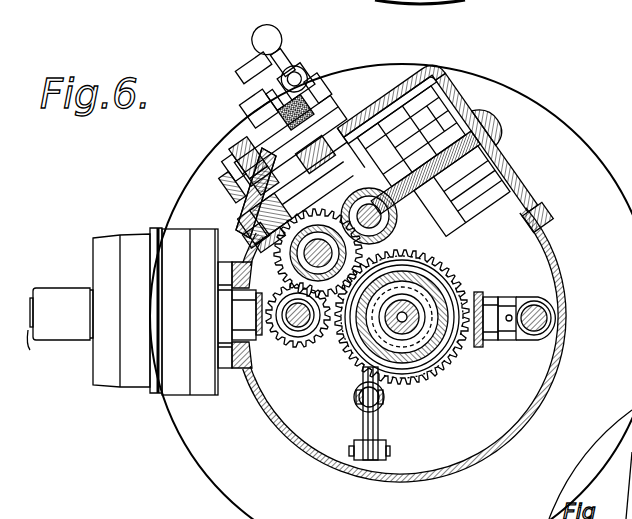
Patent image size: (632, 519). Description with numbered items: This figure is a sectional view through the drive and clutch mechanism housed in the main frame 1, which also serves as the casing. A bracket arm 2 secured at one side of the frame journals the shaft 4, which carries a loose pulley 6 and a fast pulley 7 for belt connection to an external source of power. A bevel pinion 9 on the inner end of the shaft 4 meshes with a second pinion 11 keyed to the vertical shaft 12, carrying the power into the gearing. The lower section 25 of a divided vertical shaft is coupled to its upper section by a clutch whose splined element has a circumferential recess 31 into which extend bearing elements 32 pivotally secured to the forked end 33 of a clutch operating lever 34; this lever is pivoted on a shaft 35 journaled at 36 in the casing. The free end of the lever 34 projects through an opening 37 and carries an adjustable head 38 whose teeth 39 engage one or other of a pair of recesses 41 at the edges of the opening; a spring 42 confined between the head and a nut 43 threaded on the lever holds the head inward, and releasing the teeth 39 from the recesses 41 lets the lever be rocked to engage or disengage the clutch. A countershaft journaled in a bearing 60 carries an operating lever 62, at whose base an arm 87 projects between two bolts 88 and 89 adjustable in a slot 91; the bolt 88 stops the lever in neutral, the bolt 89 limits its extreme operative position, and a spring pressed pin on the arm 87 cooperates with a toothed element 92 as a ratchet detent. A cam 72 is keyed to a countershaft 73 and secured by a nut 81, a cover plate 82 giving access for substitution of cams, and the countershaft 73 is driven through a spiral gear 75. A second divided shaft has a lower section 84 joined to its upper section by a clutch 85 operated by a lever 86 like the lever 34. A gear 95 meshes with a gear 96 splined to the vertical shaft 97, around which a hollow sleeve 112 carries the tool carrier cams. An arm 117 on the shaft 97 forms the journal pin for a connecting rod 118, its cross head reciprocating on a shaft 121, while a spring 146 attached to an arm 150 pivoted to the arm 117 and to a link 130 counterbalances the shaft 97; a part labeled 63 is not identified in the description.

The main frame 1 is at (449, 75).
The bracket arm 2 is at (62, 328).
The shaft 4 is at (31, 326).
The loose pulley 6 is at (120, 236).
The fast pulley 7 is at (180, 229).
The bevel pinion 9 is at (261, 341).
The second pinion 11 is at (302, 345).
The vertical shaft 12 is at (295, 328).
The lower section of shaft 25 is at (333, 258).
The circumferential recess 31 is at (328, 272).
The bearing elements 32 is at (399, 300).
The forked end 33 is at (258, 247).
The clutch operating lever 34 is at (234, 209).
The shaft 35 is at (266, 210).
The journal 36 is at (308, 178).
The opening 37 is at (278, 268).
The adjustable head 38 is at (232, 155).
The teeth 39 is at (251, 175).
The recesses 41 is at (254, 194).
The spring 42 is at (236, 170).
The nut 43 is at (245, 140).
The bearing 60 is at (356, 88).
The operating lever 62 is at (277, 38).
The gear box cavity 63 is at (424, 137).
The cam 72 is at (465, 98).
The countershaft 73 is at (471, 212).
The spiral gear 75 is at (500, 126).
The nut 81 is at (398, 110).
The cover plate 82 is at (404, 72).
The lower section of shaft 84 is at (386, 216).
The clutch 85 is at (382, 232).
The operating lever 86 is at (304, 155).
The arm 87 is at (258, 126).
The bolt 88 is at (250, 110).
The bolt 89 is at (257, 102).
The slot 91 is at (258, 66).
The toothed element 92 is at (320, 84).
The gear 95 is at (247, 221).
The gear 96 is at (444, 267).
The shaft 97 is at (389, 327).
The hollow sleeve 112 is at (428, 360).
The arm 117 is at (520, 293).
The connecting rod 118 is at (480, 346).
The shaft 121 is at (536, 335).
The link 130 is at (380, 441).
The spring 146 is at (385, 399).
The arm 150 is at (363, 418).